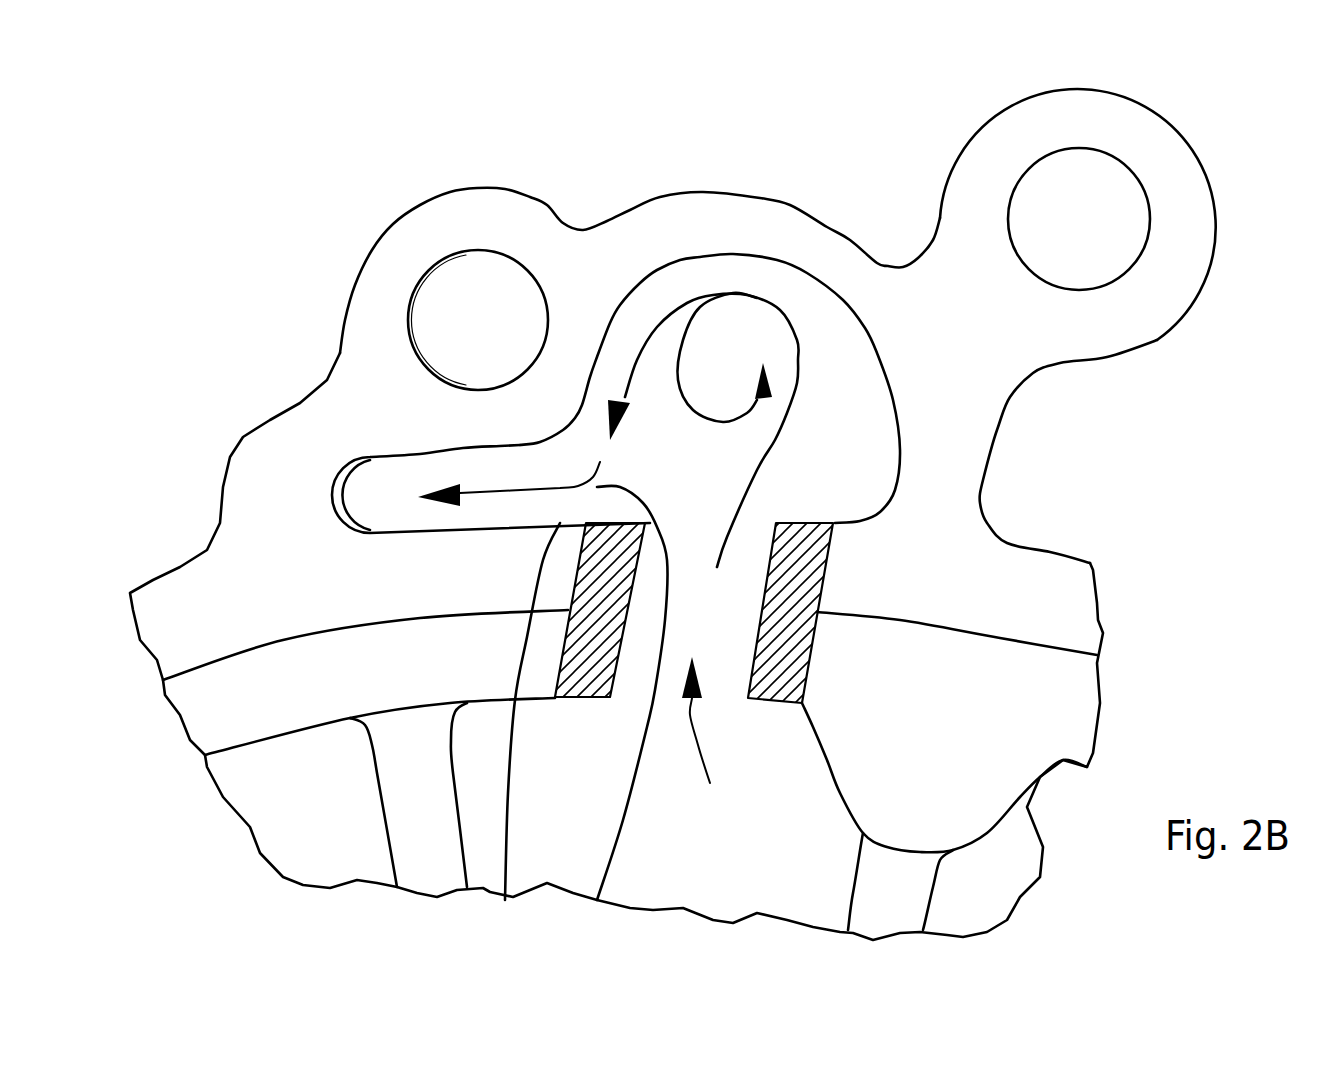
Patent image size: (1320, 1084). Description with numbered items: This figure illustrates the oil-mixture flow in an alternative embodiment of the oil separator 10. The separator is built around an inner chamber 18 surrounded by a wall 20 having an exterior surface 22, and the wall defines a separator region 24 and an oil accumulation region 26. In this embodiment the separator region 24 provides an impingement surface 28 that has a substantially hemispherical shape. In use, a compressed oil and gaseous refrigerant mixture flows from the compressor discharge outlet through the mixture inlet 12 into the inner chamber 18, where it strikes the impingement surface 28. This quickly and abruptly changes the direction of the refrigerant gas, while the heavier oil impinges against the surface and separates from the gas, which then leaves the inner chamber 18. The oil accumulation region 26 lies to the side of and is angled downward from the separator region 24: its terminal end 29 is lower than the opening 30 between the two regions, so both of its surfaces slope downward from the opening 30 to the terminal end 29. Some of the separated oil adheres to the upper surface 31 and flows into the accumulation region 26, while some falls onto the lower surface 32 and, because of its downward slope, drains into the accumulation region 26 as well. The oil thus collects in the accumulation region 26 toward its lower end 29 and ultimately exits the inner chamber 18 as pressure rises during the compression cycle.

The oil separator 10 is at (858, 142).
The mixture inlet 12 is at (693, 613).
The inner chamber 18 is at (803, 375).
The wall 20 is at (628, 278).
The exterior surface 22 is at (704, 192).
The separator region 24 is at (688, 283).
The oil accumulation region 26 is at (427, 468).
The impingement surface 28 is at (733, 255).
The terminal end 29 is at (358, 495).
The opening 30 is at (621, 714).
The upper surface 31 is at (593, 360).
The lower surface 32 is at (526, 732).